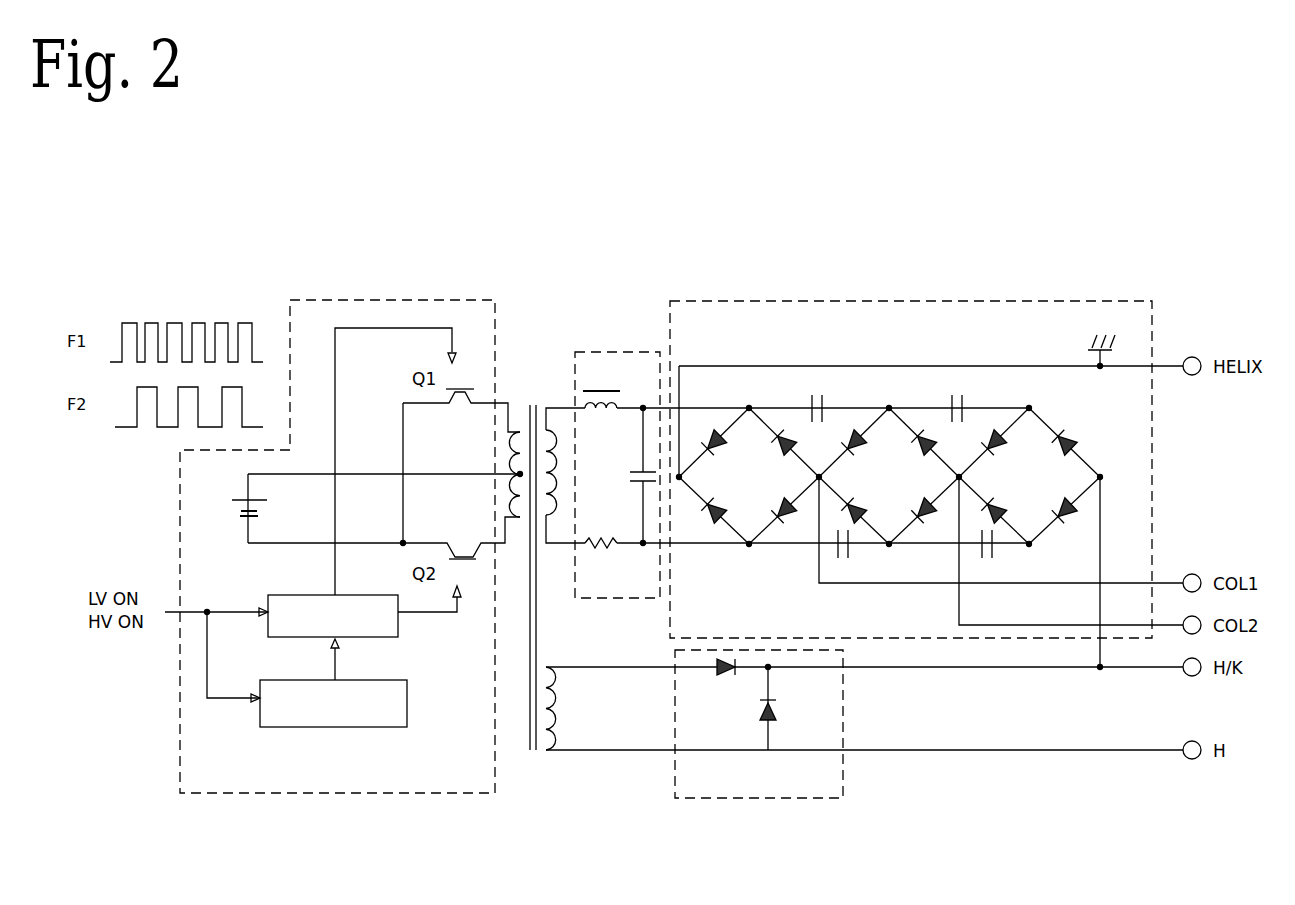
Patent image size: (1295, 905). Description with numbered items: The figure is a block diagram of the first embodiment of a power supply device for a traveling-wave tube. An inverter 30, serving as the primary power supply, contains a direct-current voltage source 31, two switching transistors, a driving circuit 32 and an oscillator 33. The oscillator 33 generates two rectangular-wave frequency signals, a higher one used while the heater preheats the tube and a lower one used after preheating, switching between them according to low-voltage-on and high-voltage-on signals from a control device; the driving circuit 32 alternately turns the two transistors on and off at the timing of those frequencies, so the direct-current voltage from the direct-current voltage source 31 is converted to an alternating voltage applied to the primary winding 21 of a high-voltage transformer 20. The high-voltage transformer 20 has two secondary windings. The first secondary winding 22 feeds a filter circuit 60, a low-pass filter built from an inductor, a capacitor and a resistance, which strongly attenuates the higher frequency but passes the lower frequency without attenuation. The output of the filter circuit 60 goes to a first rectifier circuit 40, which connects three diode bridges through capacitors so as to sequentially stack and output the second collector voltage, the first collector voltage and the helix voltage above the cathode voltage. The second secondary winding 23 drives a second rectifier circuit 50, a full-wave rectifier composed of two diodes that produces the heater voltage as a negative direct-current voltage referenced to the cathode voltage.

The high-voltage transformer 20 is at (543, 400).
The primary winding 21 is at (512, 520).
The first secondary winding 22 is at (550, 518).
The second secondary winding 23 is at (555, 752).
The inverter 30 is at (380, 795).
The direct-current voltage source 31 is at (267, 500).
The driving circuit 32 is at (398, 625).
The oscillator 33 is at (407, 705).
The first rectifier circuit 40 is at (920, 300).
The second rectifier circuit 50 is at (750, 800).
The filter circuit 60 is at (602, 350).